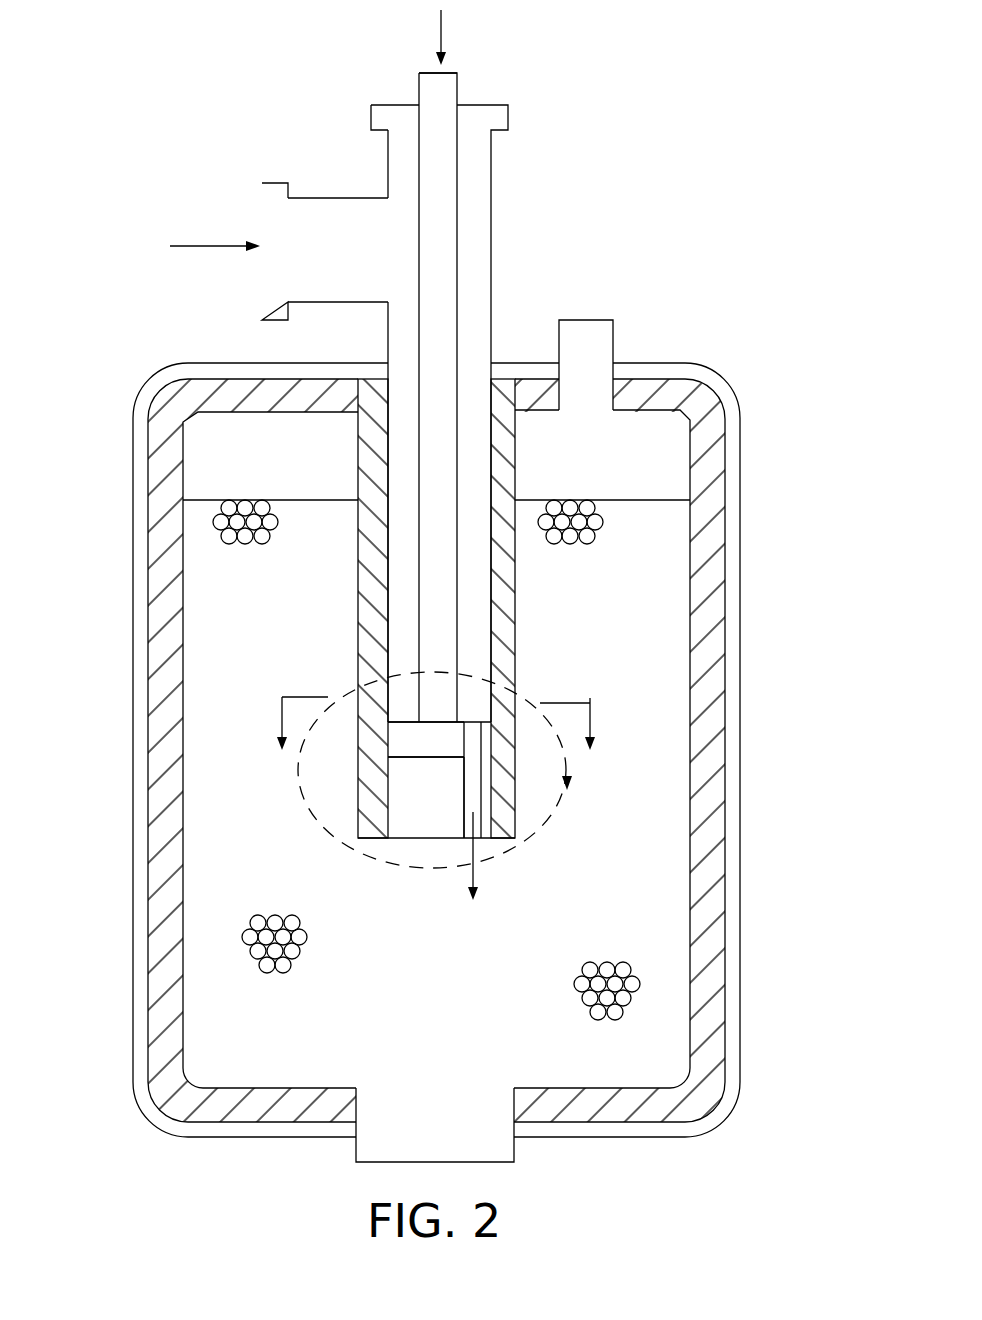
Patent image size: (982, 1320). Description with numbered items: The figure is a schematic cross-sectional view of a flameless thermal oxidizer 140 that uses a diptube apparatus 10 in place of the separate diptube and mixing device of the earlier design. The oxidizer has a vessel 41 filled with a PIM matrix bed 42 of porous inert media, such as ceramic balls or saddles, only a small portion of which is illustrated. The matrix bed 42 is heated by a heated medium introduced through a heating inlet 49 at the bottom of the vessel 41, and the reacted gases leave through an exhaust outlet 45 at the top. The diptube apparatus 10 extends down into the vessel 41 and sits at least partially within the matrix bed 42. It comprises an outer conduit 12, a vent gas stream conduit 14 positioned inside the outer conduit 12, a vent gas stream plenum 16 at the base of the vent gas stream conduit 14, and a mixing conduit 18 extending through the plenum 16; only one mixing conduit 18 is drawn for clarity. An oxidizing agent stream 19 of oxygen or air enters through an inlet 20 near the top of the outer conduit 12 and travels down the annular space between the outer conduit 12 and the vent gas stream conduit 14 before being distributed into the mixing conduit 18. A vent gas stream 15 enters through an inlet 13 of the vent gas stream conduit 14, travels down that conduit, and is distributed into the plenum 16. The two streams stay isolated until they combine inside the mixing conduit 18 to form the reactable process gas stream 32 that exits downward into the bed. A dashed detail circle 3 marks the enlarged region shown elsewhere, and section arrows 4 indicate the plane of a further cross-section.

The flameless thermal oxidizer 140 is at (132, 113).
The diptube apparatus 10 is at (369, 256).
The outer conduit 12 is at (491, 180).
The inlet 13 is at (427, 73).
The vent gas stream conduit 14 is at (460, 88).
The vent gas stream 15 is at (462, 33).
The vent gas stream plenum 16 is at (410, 745).
The mixing conduit 18 is at (388, 793).
The oxidizing agent stream 19 is at (198, 245).
The inlet 20 is at (262, 211).
The reactable process gas stream 32 is at (471, 874).
The vessel 41 is at (740, 643).
The PIM matrix bed 42 is at (232, 535).
The exhaust outlet 45 is at (613, 340).
The heating inlet 49 is at (498, 1157).
The detail view indicator FIG. 3 is at (512, 853).
The section line 4- 4 is at (436, 724).